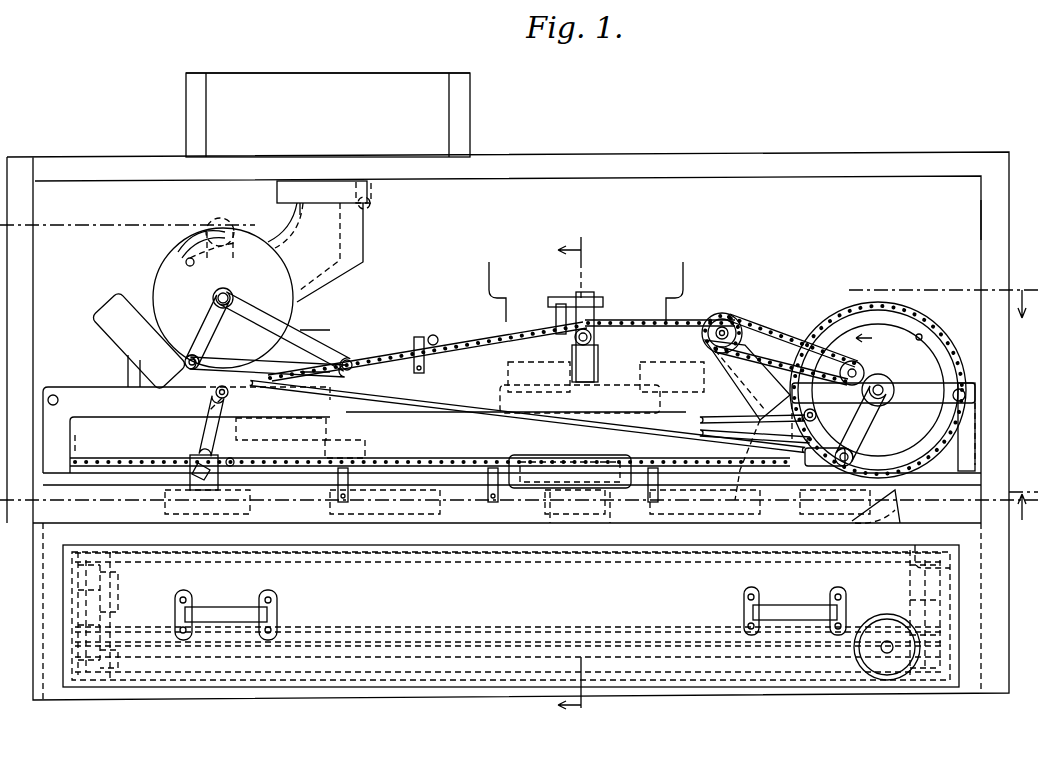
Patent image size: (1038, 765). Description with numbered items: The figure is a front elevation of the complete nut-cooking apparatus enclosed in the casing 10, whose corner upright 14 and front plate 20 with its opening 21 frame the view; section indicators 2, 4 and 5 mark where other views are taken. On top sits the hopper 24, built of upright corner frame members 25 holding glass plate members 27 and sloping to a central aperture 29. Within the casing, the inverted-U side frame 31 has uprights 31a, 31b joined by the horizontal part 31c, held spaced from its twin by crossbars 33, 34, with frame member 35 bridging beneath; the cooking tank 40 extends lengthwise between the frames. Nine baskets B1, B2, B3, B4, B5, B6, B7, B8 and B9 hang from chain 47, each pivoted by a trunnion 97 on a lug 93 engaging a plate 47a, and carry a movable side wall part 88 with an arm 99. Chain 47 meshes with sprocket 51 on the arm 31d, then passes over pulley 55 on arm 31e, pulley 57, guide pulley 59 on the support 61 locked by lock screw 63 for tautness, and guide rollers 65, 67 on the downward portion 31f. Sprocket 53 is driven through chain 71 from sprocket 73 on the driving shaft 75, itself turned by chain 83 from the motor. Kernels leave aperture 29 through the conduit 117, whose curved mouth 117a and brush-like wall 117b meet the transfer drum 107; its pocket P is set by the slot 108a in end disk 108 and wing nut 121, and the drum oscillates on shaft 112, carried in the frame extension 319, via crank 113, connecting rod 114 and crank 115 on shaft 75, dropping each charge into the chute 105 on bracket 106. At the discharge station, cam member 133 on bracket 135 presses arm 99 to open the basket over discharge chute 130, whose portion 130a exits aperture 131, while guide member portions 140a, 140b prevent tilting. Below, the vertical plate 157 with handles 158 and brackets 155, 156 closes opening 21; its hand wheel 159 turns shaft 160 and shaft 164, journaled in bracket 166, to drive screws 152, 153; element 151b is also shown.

The casing 10 is at (905, 145).
The upright 14 is at (997, 216).
The front plate 20 is at (511, 605).
The opening 21 is at (105, 555).
The hopper 24 is at (481, 89).
The upright corner frame members 25 is at (186, 104).
The plate members 27 is at (388, 73).
The aperture 29 is at (372, 212).
The side frame 31 is at (82, 441).
The upright 31a is at (68, 465).
The upright 31b is at (975, 462).
The horizontal part 31c is at (360, 405).
The upstanding arm 31d is at (745, 345).
The upstanding arm 31e is at (586, 362).
The downwardly extending portion 31f is at (870, 425).
The crossbar 33 is at (54, 394).
The crossbar 34 is at (965, 392).
The frame member 35 is at (133, 470).
The cooking tank 40 is at (898, 497).
The chain 47 is at (483, 345).
The plate 47a is at (430, 355).
The sprocket 51 is at (714, 312).
The sprocket 53 is at (740, 318).
The guide and supporting pulley 55 is at (595, 335).
The pulley 57 is at (242, 426).
The guide pulley 59 is at (200, 445).
The support 61 is at (236, 460).
The lock screw 63 is at (190, 478).
The guide roller 65 is at (745, 432).
The guide roller 67 is at (722, 421).
The chain 71 is at (878, 390).
The sprocket 73 is at (850, 378).
The driving shaft 75 is at (892, 385).
The chain 83 is at (878, 302).
The side wall part 88 is at (923, 334).
The lug 93 is at (385, 462).
The trunnion 97 is at (435, 335).
The arm 99 is at (418, 336).
The chute 105 is at (108, 318).
The bracket 106 is at (127, 383).
The transfer drum 107 is at (184, 246).
The end disk member 108 is at (293, 322).
The slot 108a is at (190, 258).
The shaft 112 is at (231, 296).
The crank 113 is at (200, 340).
The connecting rod 114 is at (328, 368).
The crank 115 is at (854, 452).
The conduit 117 is at (374, 267).
The discharge mouth 117a is at (303, 275).
The wall 117b is at (280, 236).
The wing nut 121 is at (186, 263).
The discharge chute 130 is at (555, 522).
The chute portion 130a is at (538, 462).
The aperture 131 is at (572, 462).
The cam member 133 is at (556, 296).
The bracket 135 is at (596, 295).
The upwardly curved portion 140a is at (686, 281).
The end portion 140b is at (490, 281).
The drawer rail 151b is at (370, 632).
The screw 152 is at (116, 590).
The screw 153 is at (908, 576).
The bracket 155 is at (86, 552).
The bracket 156 is at (910, 556).
The vertical plate 157 is at (510, 572).
The handle 158 is at (228, 608).
The hand wheel 159 is at (855, 647).
The horizontal shaft 160 is at (882, 652).
The shaft 164 is at (493, 658).
The bracket 166 is at (118, 655).
The disc arm 319 is at (252, 338).
The peripheral pocket P is at (223, 224).
The basket B1 is at (345, 446).
The basket B2 is at (231, 502).
The basket B3 is at (385, 502).
The basket B4 is at (575, 502).
The basket B5 is at (705, 513).
The basket B6 is at (835, 514).
The basket B7 is at (703, 362).
The basket B8 is at (539, 377).
The basket B9 is at (516, 426).
The section line 2 is at (943, 317).
The section line 4 is at (560, 476).
The section line 5 is at (1023, 517).